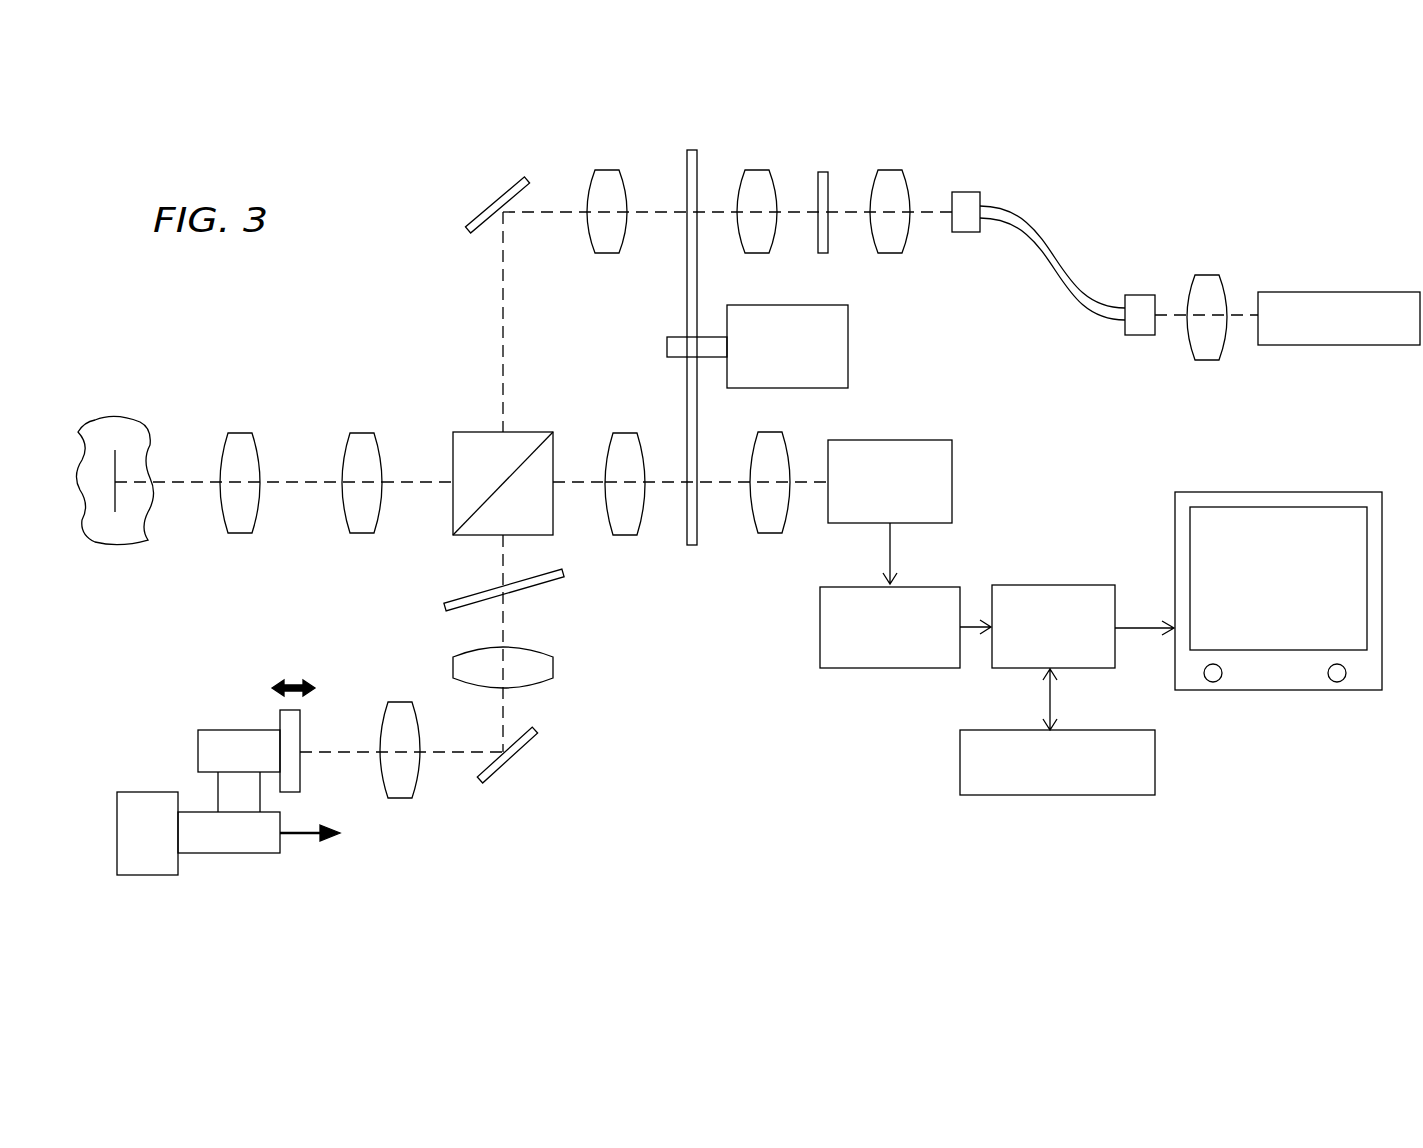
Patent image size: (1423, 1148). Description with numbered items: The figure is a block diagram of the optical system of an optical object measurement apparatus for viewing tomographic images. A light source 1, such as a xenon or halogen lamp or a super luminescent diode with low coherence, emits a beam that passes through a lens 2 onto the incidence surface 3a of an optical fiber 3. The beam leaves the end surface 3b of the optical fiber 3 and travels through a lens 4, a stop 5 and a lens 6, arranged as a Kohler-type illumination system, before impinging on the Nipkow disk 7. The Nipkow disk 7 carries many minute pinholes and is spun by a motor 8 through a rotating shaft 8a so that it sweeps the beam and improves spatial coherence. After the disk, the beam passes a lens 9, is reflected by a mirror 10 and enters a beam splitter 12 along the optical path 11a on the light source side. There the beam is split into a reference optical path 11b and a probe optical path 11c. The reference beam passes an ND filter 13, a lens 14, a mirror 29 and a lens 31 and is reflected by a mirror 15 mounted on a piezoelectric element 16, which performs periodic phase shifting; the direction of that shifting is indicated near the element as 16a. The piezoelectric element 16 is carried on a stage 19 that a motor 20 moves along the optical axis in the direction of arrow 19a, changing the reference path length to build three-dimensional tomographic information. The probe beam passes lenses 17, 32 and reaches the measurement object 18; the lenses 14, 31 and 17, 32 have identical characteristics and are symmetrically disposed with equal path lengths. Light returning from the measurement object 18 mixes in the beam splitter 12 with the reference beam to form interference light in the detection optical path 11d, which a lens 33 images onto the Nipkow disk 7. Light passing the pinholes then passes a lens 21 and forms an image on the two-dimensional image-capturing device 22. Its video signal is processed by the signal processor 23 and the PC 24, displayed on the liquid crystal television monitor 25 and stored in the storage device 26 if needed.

The light source 1 is at (1290, 292).
The lens 2 is at (1200, 276).
The optical fiber 3 is at (1042, 223).
The incidence surface 3a is at (1140, 336).
The end surface 3b is at (965, 233).
The lens 4 is at (882, 170).
The stop 5 is at (820, 172).
The lens 6 is at (750, 170).
The Nipkow disk 7 is at (688, 152).
The motor 8 is at (848, 327).
The rotating shaft 8a is at (668, 348).
The lens 9 is at (598, 170).
The mirror 10 is at (496, 205).
The optical path on the light source side 11a is at (503, 370).
The reference optical path 11b is at (503, 553).
The probe optical path 11c is at (420, 480).
The detection optical path 11d is at (575, 494).
The beam splitter 12 is at (530, 432).
The ND filter 13 is at (445, 606).
The lens 14 is at (555, 665).
The mirror 15 is at (300, 740).
The piezoelectric element 16 is at (235, 730).
The movement direction 16a is at (295, 675).
The lens 17 is at (352, 433).
The measurement object 18 is at (115, 420).
The stage 19 is at (230, 853).
The arrow 19a is at (313, 850).
The motor 20 is at (145, 875).
The lens 21 is at (770, 535).
The two-dimensional image-capturing device 22 is at (893, 440).
The signal processor 23 is at (870, 668).
The PC 24 is at (1038, 585).
The liquid crystal television monitor 25 is at (1248, 492).
The storage device 26 is at (1155, 765).
The mirror 29 is at (505, 775).
The lens 31 is at (394, 798).
The lens 32 is at (235, 433).
The lens 33 is at (613, 433).